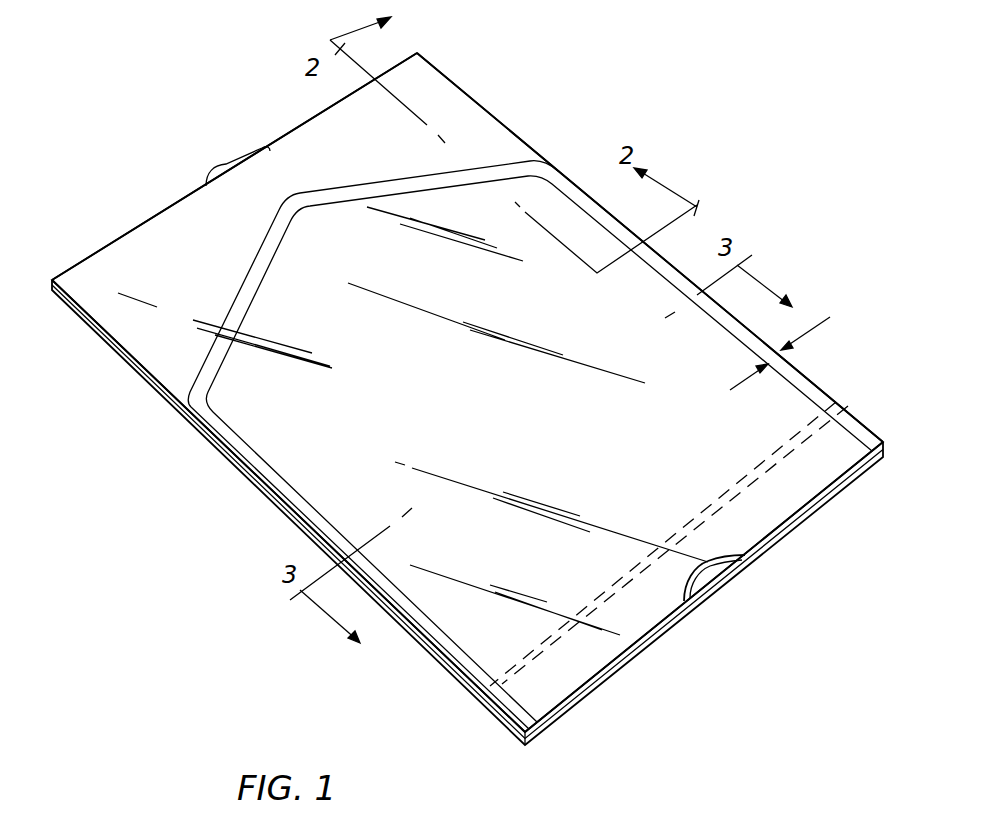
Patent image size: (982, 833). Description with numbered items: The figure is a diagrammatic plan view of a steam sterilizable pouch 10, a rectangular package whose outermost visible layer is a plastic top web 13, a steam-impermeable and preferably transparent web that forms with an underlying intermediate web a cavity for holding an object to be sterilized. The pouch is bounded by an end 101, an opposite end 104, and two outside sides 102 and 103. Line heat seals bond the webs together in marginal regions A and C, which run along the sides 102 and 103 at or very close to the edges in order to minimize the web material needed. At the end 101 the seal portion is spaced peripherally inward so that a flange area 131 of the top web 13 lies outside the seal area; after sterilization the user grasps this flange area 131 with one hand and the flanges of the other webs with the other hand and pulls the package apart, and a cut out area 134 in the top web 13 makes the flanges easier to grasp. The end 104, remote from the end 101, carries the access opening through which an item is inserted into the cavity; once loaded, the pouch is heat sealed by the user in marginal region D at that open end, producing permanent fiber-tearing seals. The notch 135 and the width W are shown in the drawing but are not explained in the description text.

The steam sterilizable pouch 10 is at (549, 141).
The top web 13 is at (245, 288).
The flange area 131 is at (178, 336).
The end 101 is at (167, 206).
The side 102 is at (437, 648).
The side 103 is at (765, 340).
The end 104 is at (652, 635).
The cut out area 134 is at (237, 147).
The edge notch 135 is at (708, 587).
The land width W is at (760, 364).
The marginal region D is at (838, 400).
The marginal region C is at (272, 477).
The marginal region A is at (652, 269).